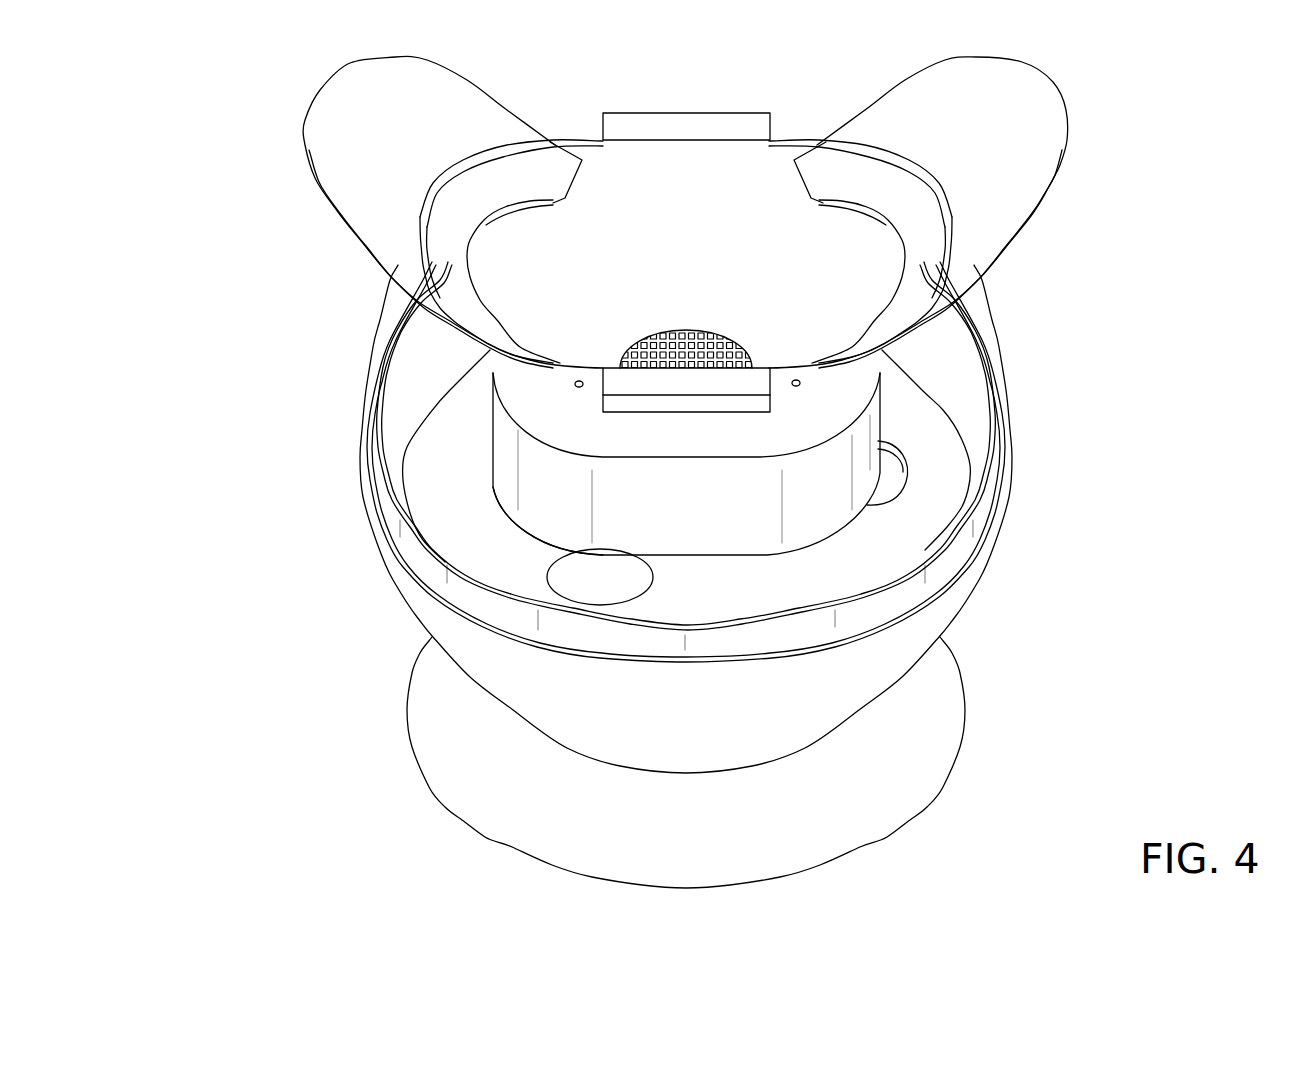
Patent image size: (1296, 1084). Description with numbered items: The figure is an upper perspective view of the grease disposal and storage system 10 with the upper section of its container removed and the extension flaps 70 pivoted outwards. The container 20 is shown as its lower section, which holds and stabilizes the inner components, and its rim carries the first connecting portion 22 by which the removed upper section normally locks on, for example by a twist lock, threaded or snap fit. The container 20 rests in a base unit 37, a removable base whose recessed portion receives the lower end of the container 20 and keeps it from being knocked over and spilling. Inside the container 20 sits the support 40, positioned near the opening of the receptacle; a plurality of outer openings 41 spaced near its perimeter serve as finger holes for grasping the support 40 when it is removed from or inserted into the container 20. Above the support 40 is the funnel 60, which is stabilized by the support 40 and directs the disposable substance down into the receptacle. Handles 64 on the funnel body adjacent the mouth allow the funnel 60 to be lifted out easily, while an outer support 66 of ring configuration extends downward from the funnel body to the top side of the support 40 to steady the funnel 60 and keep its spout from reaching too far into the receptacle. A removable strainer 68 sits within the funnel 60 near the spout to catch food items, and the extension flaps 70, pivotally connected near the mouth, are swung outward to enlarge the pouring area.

The grease disposal and storage system 10 is at (228, 260).
The container 20 is at (385, 576).
The first connecting portion 22 is at (368, 390).
The base unit 37 is at (437, 737).
The support 40 is at (938, 422).
The outer openings 41 is at (910, 477).
The funnel 60 is at (803, 134).
The handles 64 is at (747, 113).
The outer support 66 is at (490, 425).
The strainer 68 is at (670, 333).
The extension flaps 70 is at (292, 143).